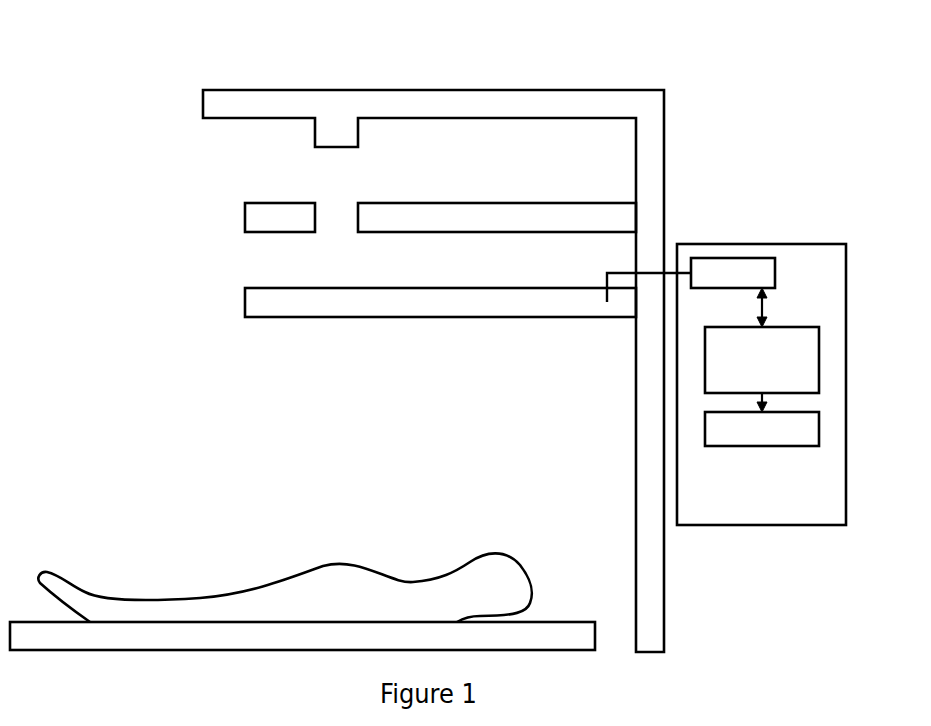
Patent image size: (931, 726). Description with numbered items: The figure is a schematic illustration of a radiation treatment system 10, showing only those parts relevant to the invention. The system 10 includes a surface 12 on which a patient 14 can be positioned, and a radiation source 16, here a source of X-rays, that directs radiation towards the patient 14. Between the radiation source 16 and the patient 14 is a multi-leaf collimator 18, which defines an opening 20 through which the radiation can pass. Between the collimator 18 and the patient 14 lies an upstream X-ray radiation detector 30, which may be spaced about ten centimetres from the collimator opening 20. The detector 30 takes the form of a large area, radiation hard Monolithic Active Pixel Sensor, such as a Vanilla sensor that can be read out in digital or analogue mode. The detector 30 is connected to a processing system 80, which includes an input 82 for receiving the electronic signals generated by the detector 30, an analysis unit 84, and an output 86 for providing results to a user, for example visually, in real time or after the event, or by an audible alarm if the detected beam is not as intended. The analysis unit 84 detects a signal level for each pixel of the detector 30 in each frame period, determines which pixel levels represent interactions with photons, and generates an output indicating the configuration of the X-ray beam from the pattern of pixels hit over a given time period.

The radiation treatment system 10 is at (111, 93).
The surface 12 is at (40, 622).
The patient 14 is at (82, 592).
The radiation source 16 is at (333, 127).
The multi-leaf collimator 18 is at (510, 230).
The opening 20 is at (337, 217).
The upstream X-ray radiation detector 30 is at (335, 288).
The processing system 80 is at (803, 244).
The input 82 is at (732, 258).
The analysis unit 84 is at (782, 327).
The output 86 is at (819, 427).